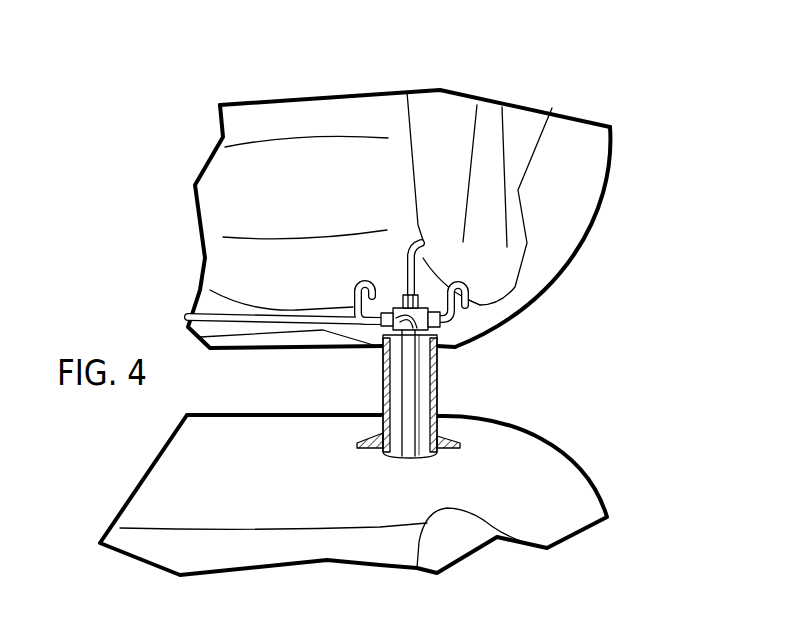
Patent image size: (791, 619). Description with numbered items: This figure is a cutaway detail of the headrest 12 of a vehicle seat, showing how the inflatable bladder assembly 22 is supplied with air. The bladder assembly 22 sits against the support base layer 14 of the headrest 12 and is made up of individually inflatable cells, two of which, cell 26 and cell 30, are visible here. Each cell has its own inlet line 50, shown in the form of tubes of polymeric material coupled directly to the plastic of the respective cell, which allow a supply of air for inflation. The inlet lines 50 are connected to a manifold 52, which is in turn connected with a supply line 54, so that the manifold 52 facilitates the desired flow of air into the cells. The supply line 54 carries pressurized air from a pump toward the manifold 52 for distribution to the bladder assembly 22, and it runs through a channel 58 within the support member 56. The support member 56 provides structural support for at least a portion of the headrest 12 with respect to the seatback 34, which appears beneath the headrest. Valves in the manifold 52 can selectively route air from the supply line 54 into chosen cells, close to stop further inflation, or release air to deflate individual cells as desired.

The headrest 12 is at (668, 105).
The support base layer 14 is at (583, 193).
The inflatable bladder assembly 22 is at (570, 97).
The cell 26 is at (360, 117).
The cell 30 is at (518, 120).
The seatback 34 is at (577, 495).
The inlet lines 50 is at (410, 263).
The manifold 52 is at (424, 322).
The supply line 54 is at (408, 370).
The support member 56 is at (437, 413).
The channel 58 is at (423, 427).